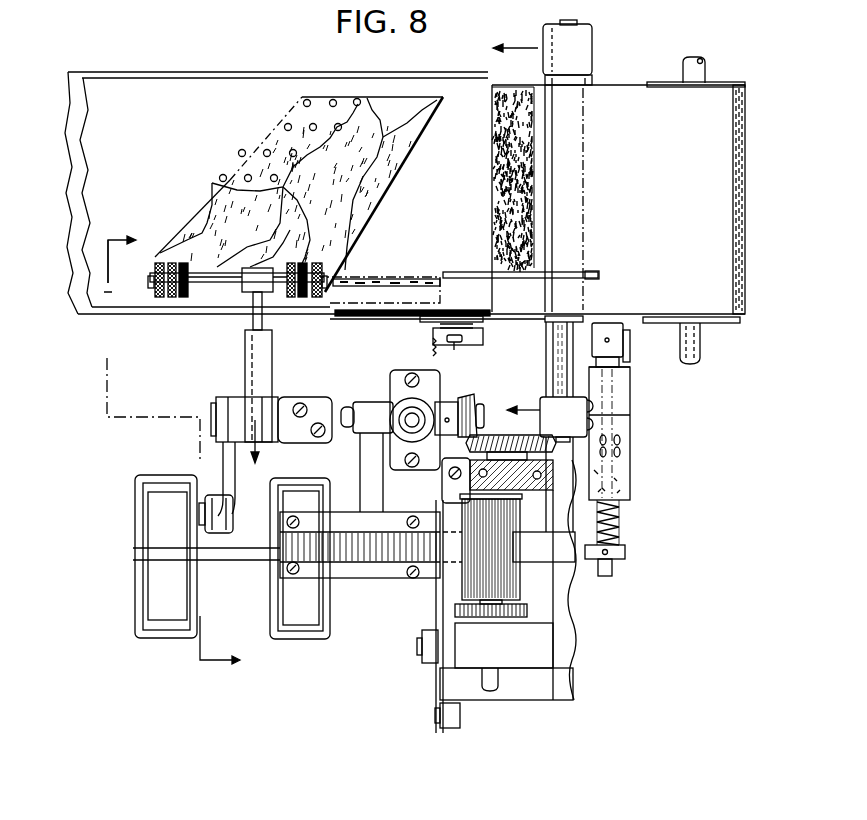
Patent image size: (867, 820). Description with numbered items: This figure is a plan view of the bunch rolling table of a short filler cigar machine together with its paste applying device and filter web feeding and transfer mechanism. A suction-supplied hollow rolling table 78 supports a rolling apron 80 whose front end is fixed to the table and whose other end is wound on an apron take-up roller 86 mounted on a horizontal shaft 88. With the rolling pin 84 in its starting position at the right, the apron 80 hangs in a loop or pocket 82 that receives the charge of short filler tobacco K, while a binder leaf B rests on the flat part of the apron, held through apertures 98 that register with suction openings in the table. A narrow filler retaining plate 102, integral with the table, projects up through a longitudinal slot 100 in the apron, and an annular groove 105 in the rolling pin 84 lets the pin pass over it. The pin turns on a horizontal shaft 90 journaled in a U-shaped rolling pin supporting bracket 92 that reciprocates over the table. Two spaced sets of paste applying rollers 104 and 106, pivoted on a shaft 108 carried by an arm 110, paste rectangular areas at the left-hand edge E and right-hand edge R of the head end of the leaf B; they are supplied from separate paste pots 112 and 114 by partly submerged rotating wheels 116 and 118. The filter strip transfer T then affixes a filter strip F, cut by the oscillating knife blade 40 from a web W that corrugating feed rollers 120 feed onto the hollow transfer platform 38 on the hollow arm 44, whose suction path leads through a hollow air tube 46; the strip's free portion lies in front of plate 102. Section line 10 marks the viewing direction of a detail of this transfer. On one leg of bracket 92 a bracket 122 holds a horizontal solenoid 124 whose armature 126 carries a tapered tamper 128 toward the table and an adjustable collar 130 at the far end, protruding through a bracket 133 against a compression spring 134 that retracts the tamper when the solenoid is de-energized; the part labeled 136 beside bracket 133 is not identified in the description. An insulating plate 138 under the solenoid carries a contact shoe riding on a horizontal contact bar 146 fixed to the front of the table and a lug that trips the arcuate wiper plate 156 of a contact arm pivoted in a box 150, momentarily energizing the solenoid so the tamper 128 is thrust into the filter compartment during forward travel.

The rolling apron 80 is at (113, 83).
The hollow rolling table 78 is at (105, 316).
The apertures 98 is at (343, 100).
The U-shaped rolling pin supporting bracket 92 is at (592, 40).
The rolling pin 84 is at (596, 96).
The apron take-up roller 86 is at (729, 323).
The horizontal shaft 88 is at (700, 341).
The longitudinal slot 100 is at (447, 273).
The annular groove 105 is at (600, 276).
The filler retaining plate 102 is at (380, 276).
The paste applying rollers 104 is at (173, 300).
The shaft 108 is at (231, 290).
The paste applying rollers 106 is at (318, 300).
The arm 110 is at (268, 367).
The section line 10 is at (185, 452).
The hollow air tube 46 is at (426, 412).
The hollow arm 44 is at (370, 458).
The horizontal shaft 90 is at (534, 385).
The hanging loop or pocket 82 is at (492, 320).
The horizontal contact bar 146 is at (480, 335).
The arcuate wiper plate 156 is at (455, 344).
The box 150 is at (432, 338).
The tamper 128 is at (608, 326).
The plate 138 is at (630, 352).
The horizontal solenoid 124 is at (622, 395).
The armature 126 is at (624, 382).
The bracket 122 is at (598, 415).
The slots 136 is at (627, 441).
The bracket 133 is at (624, 480).
The compression spring 134 is at (621, 518).
The collar 130 is at (627, 549).
The oscillating knife blade 40 is at (437, 508).
The hollow transfer platform 38 is at (377, 580).
The fluted feed rollers 120 is at (545, 601).
The paste pot 112 is at (136, 628).
The continuously rotating wheel 116 is at (153, 573).
The paste pot 114 is at (325, 640).
The continuously rotating wheel 118 is at (287, 598).
The short filler tobacco charge K is at (522, 103).
The binder leaf B is at (368, 207).
The right-hand edge R is at (380, 292).
The left-hand edge E is at (153, 303).
The filter strip transfer T is at (369, 390).
The filter strip F is at (389, 560).
The web W is at (573, 568).